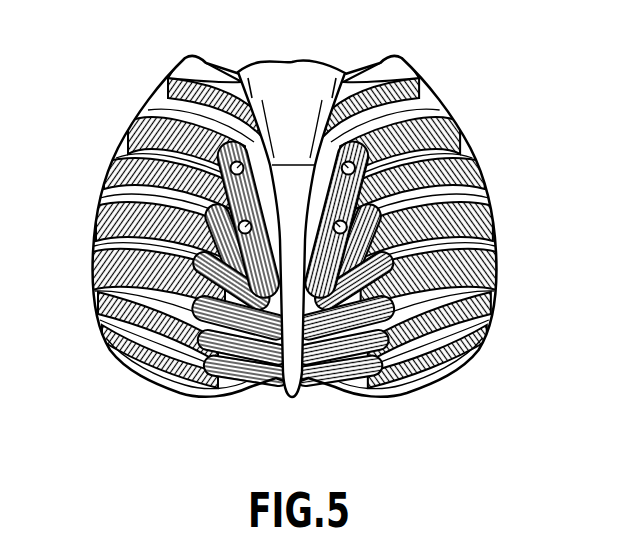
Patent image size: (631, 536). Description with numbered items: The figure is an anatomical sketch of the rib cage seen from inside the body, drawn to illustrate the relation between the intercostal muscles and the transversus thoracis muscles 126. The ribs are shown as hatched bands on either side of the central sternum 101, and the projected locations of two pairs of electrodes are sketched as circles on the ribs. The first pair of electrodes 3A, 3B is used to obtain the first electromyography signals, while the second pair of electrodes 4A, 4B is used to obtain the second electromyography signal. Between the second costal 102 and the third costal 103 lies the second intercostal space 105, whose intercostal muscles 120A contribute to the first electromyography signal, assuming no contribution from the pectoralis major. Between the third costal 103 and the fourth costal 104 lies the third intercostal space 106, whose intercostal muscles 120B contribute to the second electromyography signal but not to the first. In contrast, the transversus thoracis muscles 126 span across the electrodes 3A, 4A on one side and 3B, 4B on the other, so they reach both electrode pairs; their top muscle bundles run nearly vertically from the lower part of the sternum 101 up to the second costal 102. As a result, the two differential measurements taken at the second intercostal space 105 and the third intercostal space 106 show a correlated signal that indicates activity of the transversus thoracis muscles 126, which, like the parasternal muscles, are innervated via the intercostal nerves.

The sternum 101 is at (297, 395).
The second costal 102 is at (152, 100).
The third costal 103 is at (127, 148).
The fourth costal 104 is at (102, 198).
The second intercostal space 105 is at (455, 120).
The third intercostal space 106 is at (477, 173).
The intercostal muscles 120A is at (400, 112).
The intercostal muscles 120B is at (412, 217).
The transversus thoracis muscles 126 is at (316, 158).
The electrode 3A is at (345, 160).
The electrode 3B is at (241, 160).
The electrode 4A is at (455, 318).
The electrode 4B is at (130, 318).